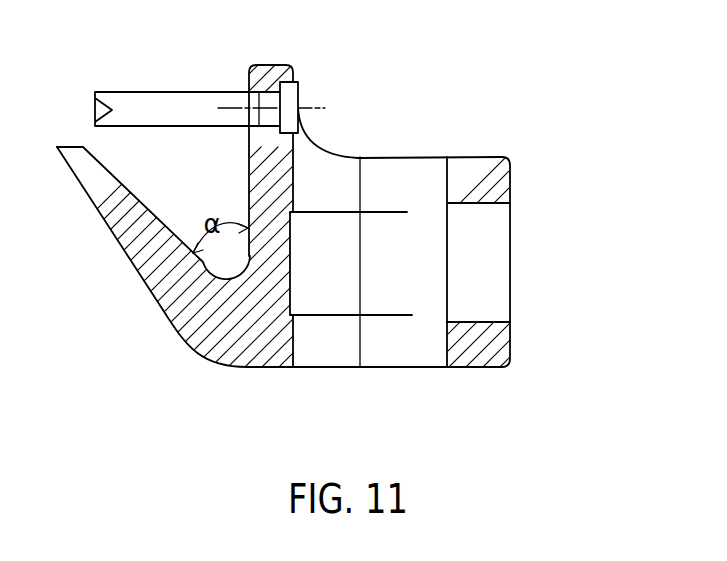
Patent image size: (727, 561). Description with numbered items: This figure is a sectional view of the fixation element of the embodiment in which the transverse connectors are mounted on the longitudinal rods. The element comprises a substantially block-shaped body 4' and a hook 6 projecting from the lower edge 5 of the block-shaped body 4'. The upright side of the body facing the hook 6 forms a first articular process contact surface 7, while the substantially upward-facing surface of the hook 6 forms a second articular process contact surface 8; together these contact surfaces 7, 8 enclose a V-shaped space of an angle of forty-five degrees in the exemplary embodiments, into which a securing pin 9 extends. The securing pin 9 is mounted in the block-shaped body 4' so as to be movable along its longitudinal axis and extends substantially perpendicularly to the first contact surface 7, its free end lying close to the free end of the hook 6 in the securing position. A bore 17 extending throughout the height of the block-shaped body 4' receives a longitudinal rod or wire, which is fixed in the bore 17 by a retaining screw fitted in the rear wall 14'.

The securing pin 9 is at (161, 101).
The first articular process contact surface 7 is at (250, 165).
The second articular process contact surface 8 is at (140, 201).
The hook 6 is at (140, 235).
The lower edge 5 is at (262, 368).
The bore 17 is at (393, 248).
The block-shaped body 4' is at (503, 254).
The rear wall 14' is at (526, 300).